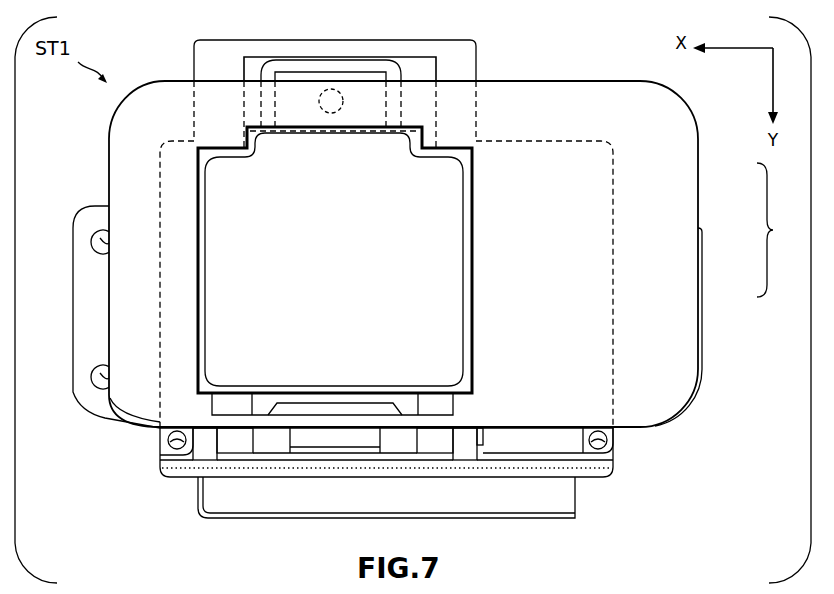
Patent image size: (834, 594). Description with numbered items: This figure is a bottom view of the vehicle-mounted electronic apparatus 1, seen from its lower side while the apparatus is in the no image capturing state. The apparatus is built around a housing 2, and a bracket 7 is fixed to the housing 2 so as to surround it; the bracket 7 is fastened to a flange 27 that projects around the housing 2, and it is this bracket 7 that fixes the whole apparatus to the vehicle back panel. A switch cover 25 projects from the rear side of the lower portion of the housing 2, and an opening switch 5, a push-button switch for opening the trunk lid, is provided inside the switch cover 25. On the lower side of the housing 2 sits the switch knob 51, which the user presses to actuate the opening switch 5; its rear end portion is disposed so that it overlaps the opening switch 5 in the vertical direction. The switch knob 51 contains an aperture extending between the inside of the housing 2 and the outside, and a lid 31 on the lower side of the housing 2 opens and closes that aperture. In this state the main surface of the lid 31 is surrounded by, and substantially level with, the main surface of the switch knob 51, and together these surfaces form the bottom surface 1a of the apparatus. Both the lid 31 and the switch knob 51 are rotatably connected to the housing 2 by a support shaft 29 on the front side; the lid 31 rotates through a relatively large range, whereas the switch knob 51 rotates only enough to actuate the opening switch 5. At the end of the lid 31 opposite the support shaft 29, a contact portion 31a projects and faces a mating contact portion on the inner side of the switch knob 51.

The vehicle-mounted electronic apparatus 1 is at (431, 225).
The bottom surface 1a is at (780, 230).
The housing 2 is at (575, 493).
The opening switch 5 is at (387, 76).
The bracket 7 is at (93, 303).
The switch cover 25 is at (386, 234).
The flange 27 is at (414, 467).
The support shaft 29 is at (484, 436).
The lid 31 is at (438, 262).
The contact portion 31a is at (363, 148).
The switch knob 51 is at (683, 185).